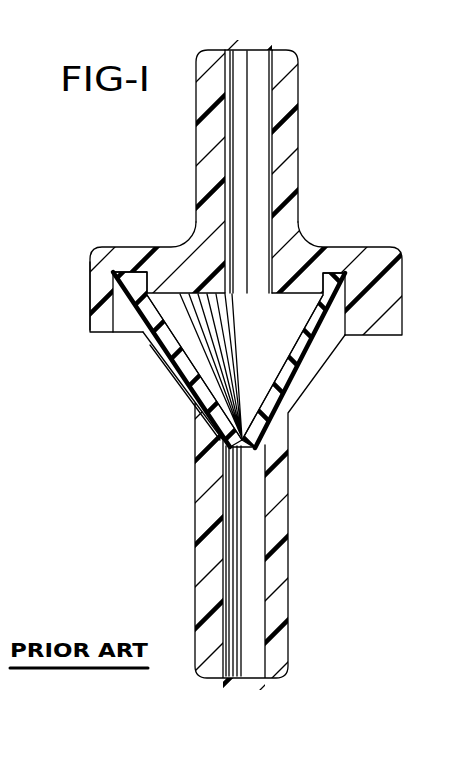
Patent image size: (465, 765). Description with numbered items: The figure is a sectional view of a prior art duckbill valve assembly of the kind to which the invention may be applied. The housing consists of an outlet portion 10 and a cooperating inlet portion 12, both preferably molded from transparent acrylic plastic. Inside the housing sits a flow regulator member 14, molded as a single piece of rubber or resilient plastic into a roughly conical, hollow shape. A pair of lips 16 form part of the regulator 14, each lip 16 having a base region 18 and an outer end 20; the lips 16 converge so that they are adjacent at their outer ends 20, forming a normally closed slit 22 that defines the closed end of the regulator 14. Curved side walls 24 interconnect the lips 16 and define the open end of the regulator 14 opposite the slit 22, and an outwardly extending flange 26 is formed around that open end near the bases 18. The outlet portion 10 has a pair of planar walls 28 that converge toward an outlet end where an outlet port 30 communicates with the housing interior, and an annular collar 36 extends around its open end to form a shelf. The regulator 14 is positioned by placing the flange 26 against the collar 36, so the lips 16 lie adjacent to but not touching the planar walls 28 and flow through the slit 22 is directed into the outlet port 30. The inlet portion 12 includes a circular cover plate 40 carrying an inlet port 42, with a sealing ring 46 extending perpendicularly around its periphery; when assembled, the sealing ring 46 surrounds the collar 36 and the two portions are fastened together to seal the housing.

The outlet portion 10 is at (334, 397).
The inlet portion 12 is at (313, 206).
The flow regulator member 14 is at (243, 378).
The lips 16 is at (180, 365).
The base region 18 is at (203, 313).
The outer end 20 is at (203, 432).
The slit 22 is at (250, 450).
The curved side walls 24 is at (300, 306).
The flange 26 is at (174, 290).
The planar walls 28 is at (178, 400).
The outlet port 30 is at (290, 522).
The annular collar 36 is at (140, 320).
The cover plate 40 is at (131, 258).
The inlet port 42 is at (271, 114).
The sealing ring 46 is at (90, 281).